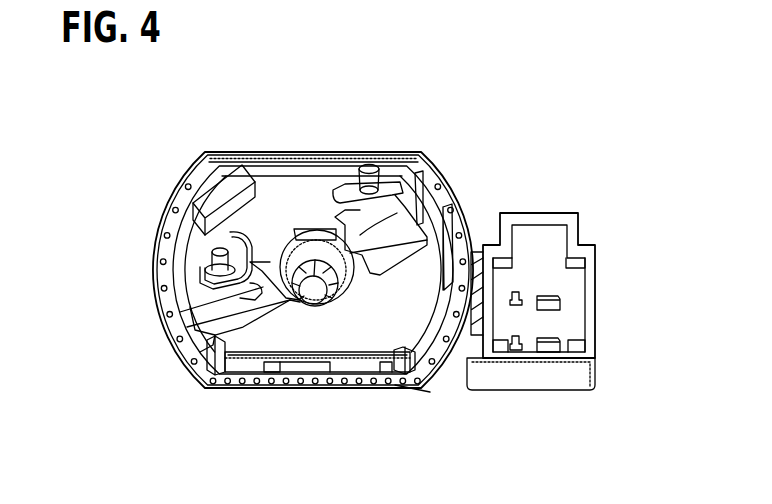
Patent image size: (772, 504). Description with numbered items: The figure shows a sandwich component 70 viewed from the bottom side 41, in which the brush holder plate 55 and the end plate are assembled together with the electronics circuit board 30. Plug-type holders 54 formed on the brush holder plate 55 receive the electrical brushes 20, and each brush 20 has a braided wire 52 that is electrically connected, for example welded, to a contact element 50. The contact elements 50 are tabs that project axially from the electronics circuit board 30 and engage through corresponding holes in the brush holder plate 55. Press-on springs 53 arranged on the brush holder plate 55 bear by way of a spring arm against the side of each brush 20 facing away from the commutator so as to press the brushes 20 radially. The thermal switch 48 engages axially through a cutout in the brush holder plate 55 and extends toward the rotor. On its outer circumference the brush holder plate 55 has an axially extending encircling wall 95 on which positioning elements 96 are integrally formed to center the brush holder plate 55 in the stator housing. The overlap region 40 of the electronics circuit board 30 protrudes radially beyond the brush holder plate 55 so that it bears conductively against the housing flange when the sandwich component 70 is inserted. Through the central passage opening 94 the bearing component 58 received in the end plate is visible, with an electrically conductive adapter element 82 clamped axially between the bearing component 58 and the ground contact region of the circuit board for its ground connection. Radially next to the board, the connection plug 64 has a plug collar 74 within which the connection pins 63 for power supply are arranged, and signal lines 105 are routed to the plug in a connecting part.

The sandwich component 70 is at (186, 169).
The thermal switch 48 is at (222, 175).
The adapter element 82 is at (306, 232).
The press-on spring 53 is at (365, 165).
The contact element 50 is at (411, 182).
The electronics circuit board 30 is at (441, 179).
The brush 20 is at (454, 201).
The plug collar 74 is at (552, 216).
The connection plug 64 is at (548, 271).
The connection pin 63 is at (560, 343).
The bottom side 41 is at (205, 249).
The braided wire 52 is at (172, 357).
The plug-type holder 54 is at (190, 362).
The overlap region 40 is at (237, 378).
The encircling wall 95 is at (260, 371).
The brush holder plate 55 is at (311, 350).
The central passage opening 94 is at (340, 296).
The bearing component 58 is at (397, 375).
The positioning element 96 is at (400, 393).
The signal line 105 is at (516, 352).